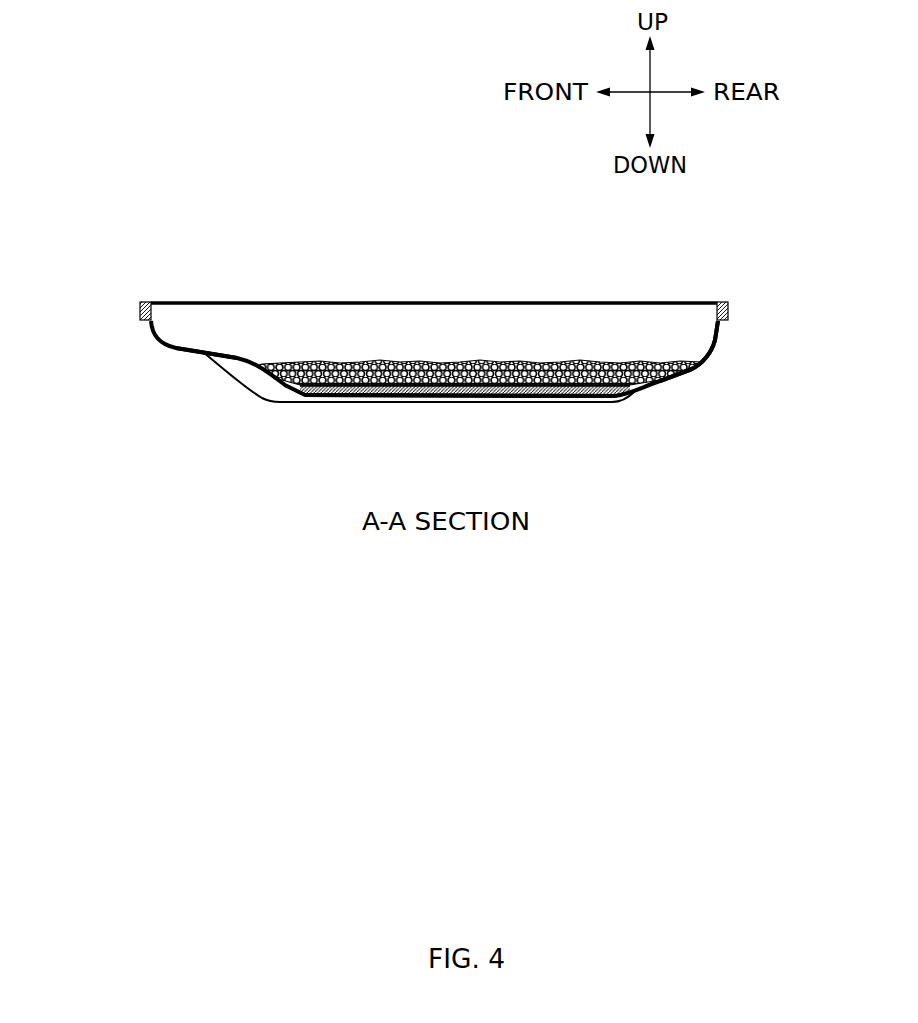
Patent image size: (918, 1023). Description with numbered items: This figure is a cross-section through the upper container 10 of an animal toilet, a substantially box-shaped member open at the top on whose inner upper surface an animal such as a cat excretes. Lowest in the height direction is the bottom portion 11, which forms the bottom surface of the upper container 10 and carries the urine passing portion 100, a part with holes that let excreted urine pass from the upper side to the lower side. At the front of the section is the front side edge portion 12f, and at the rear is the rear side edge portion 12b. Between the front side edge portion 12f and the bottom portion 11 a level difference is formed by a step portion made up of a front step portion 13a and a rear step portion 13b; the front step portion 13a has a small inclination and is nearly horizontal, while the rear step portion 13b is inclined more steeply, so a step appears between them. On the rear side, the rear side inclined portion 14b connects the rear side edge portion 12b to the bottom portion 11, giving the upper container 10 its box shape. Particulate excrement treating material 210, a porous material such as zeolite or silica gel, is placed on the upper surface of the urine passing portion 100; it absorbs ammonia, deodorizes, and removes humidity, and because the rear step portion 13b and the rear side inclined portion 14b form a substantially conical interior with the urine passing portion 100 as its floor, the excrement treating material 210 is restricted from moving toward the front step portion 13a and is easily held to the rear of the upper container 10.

The upper container 10 is at (436, 324).
The bottom portion 11 is at (573, 393).
The urine passing portion 100 is at (476, 432).
The front side edge portion 12f is at (140, 312).
The rear side edge portion 12b is at (730, 311).
The front step portion 13a is at (187, 353).
The rear step portion 13b is at (258, 377).
The rear side inclined portion 14b is at (707, 358).
The excrement treating material 210 is at (440, 362).